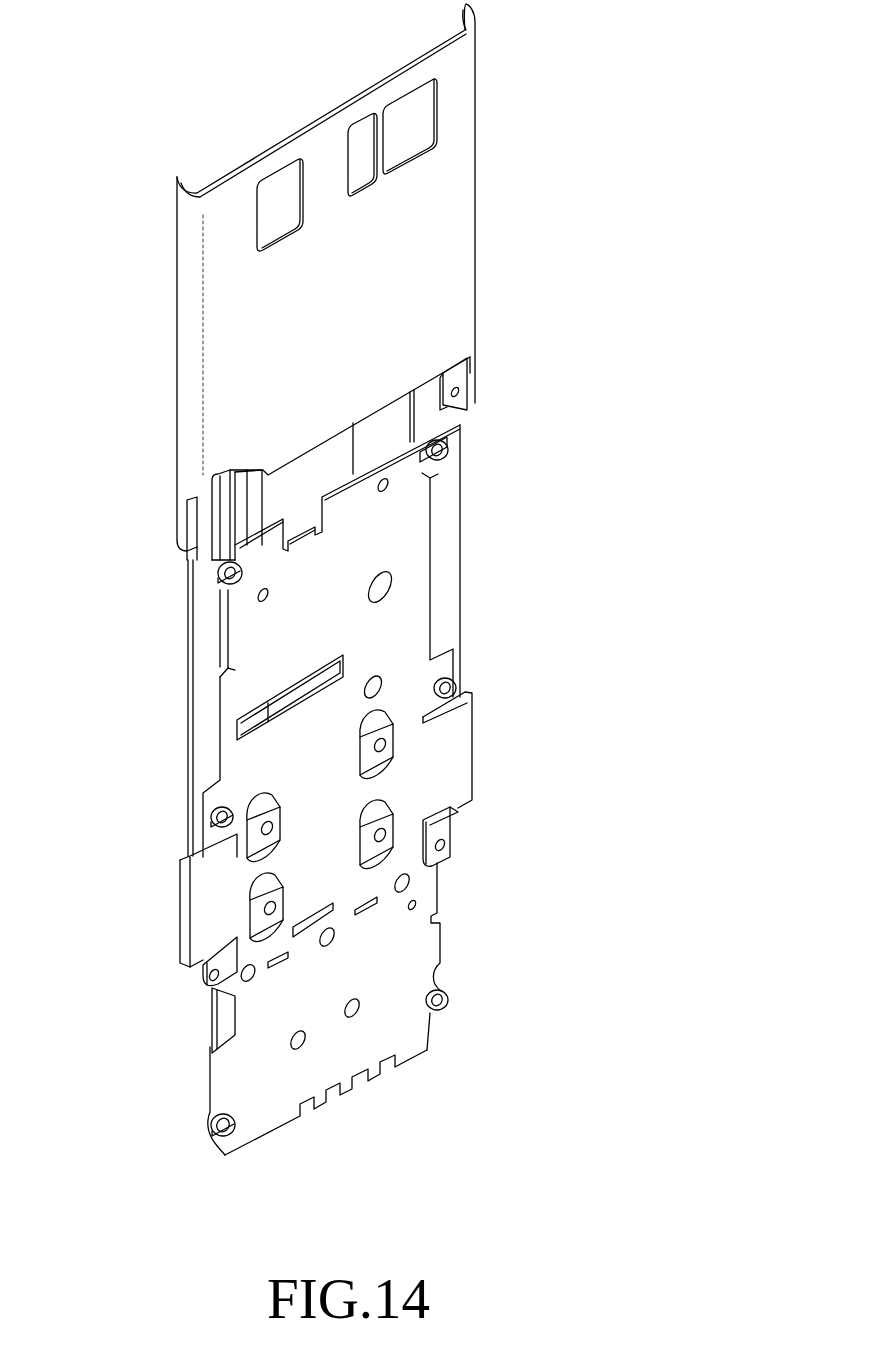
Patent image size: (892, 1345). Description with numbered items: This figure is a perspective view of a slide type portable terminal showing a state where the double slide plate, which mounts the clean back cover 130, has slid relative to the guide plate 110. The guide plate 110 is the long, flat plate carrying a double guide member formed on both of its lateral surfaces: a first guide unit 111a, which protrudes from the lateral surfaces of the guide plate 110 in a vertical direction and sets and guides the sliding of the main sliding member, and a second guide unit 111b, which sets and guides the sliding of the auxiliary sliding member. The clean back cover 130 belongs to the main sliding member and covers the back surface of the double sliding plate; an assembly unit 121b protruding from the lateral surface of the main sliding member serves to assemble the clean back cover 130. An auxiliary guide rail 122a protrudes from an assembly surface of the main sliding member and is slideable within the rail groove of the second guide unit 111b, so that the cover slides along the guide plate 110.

The guide plate 110 is at (273, 1097).
The first guide unit 111a is at (463, 757).
The second guide unit 111b is at (203, 635).
The assembly unit 121b is at (477, 402).
The auxiliary guide rail 122a is at (230, 480).
The clean back cover 130 is at (453, 263).